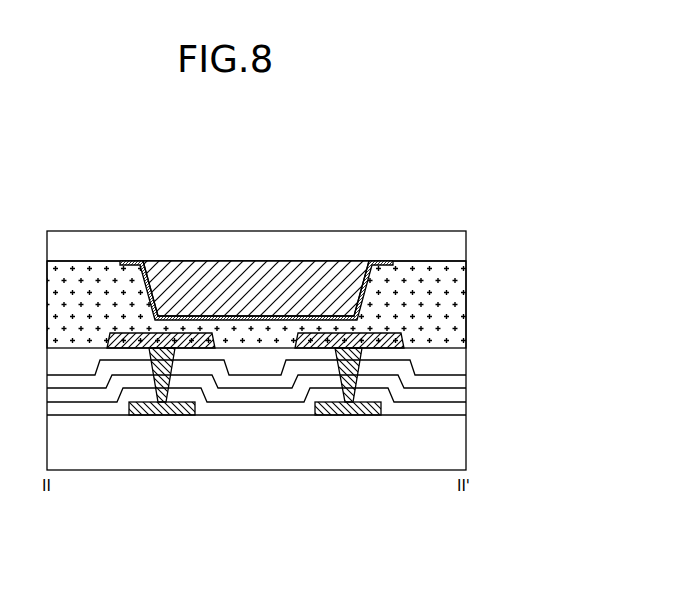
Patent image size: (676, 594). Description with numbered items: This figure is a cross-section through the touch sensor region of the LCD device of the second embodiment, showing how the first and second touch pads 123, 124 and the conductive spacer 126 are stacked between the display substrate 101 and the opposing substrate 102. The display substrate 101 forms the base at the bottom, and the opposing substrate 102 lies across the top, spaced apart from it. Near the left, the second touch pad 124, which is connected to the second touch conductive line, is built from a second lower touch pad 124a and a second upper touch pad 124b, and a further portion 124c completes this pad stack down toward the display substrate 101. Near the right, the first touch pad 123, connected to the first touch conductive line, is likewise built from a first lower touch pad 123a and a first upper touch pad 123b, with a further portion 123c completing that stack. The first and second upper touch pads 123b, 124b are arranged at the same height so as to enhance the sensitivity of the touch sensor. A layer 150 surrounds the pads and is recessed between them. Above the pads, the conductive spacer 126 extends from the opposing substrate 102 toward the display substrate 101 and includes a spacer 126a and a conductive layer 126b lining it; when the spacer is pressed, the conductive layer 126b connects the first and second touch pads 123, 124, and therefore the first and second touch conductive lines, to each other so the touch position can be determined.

The display substrate 101 is at (466, 444).
The opposing substrate 102 is at (466, 245).
The insulating layer 150 is at (466, 304).
The conductive spacer 126 is at (256, 238).
The pixel electrode 126a is at (300, 184).
The conductive liner layer 126b is at (282, 317).
The second touch pad 124 is at (164, 441).
The second lower touch pad 124a is at (165, 402).
The second upper touch pad 124b is at (125, 348).
The lower electrode 124c is at (176, 382).
The first touch pad 123 is at (350, 441).
The first lower touch pad 123a is at (350, 402).
The first upper touch pad 123b is at (310, 348).
The lower electrode 123c is at (357, 380).